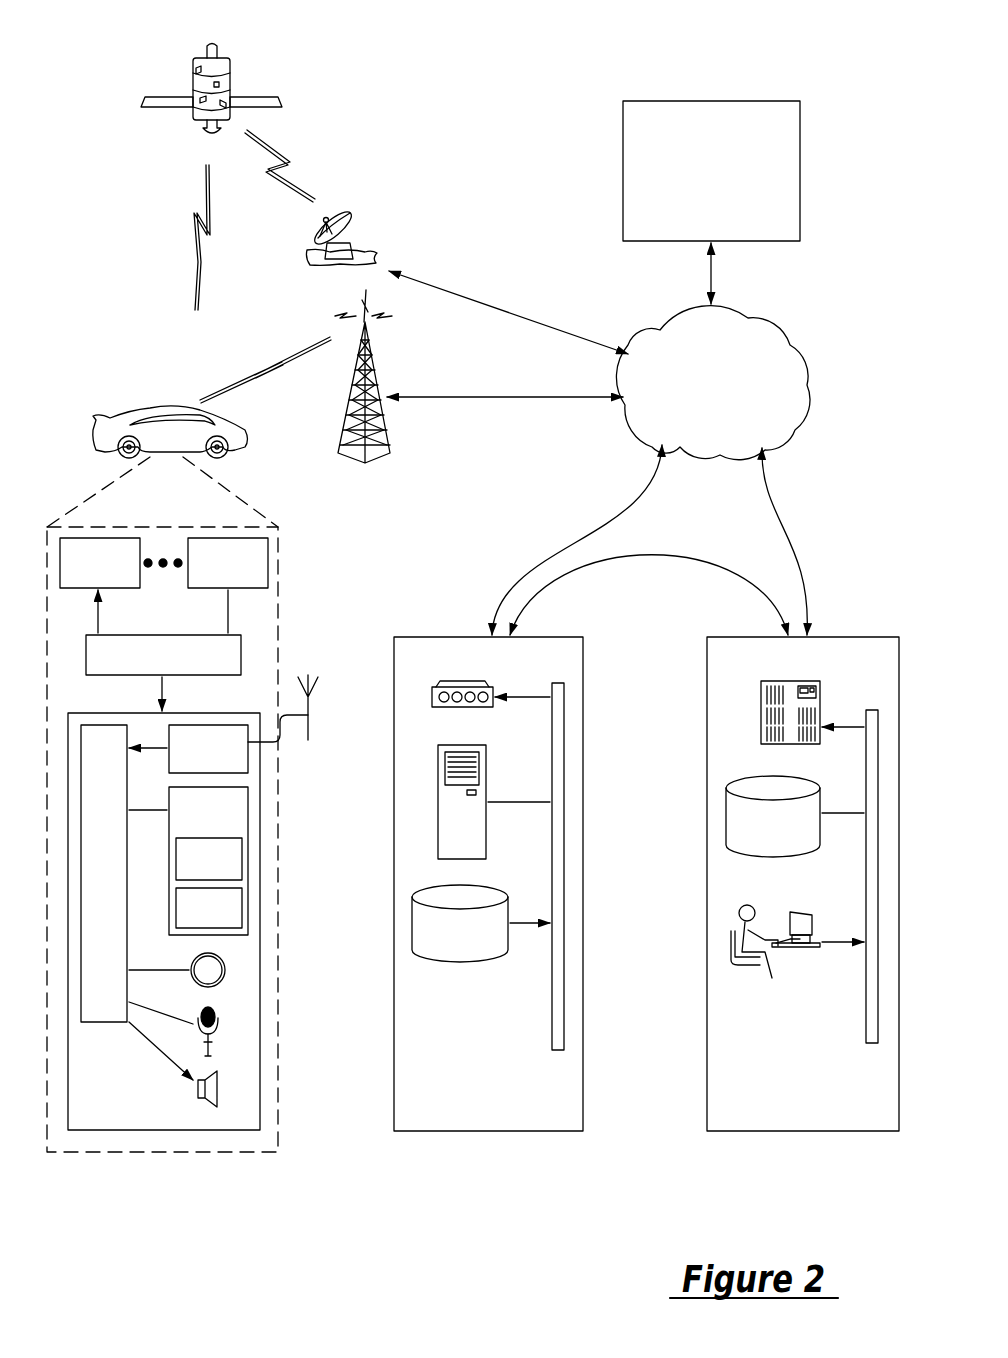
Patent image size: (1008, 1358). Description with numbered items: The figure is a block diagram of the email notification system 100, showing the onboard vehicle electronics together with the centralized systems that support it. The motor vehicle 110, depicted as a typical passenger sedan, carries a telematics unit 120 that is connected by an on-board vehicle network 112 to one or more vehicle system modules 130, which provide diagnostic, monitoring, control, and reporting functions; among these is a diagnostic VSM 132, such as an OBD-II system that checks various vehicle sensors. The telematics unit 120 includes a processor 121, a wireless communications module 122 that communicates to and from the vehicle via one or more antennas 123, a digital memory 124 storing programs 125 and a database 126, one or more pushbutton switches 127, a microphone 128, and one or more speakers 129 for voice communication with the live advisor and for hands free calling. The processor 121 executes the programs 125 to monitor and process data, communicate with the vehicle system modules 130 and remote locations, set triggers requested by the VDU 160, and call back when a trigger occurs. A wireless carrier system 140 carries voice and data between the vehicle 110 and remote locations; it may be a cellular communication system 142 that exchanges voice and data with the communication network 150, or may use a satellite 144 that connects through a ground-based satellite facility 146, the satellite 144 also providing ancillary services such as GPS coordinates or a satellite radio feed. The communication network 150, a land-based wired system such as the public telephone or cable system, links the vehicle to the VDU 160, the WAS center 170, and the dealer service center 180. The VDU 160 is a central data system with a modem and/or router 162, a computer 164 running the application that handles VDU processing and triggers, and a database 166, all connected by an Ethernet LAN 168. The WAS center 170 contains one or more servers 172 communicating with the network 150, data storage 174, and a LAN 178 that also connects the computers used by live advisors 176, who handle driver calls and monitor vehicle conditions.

The email notification system 100 is at (590, 63).
The motor vehicle 110 is at (148, 410).
The on-board vehicle network 112 is at (153, 665).
The telematics unit 120 is at (198, 1133).
The processor 121 is at (107, 1022).
The wireless communications module 122 is at (198, 760).
The antenna 123 is at (308, 725).
The digital memory 124 is at (198, 820).
The programs 125 is at (209, 859).
The database 126 is at (209, 908).
The pushbutton switch 127 is at (242, 970).
The microphone 128 is at (232, 1030).
The speaker 129 is at (232, 1090).
The vehicle system module 130 is at (90, 575).
The diagnostic VSM 132 is at (194, 553).
The wireless carrier system 140 is at (414, 176).
The cellular communication system 142 is at (388, 433).
The satellite 144 is at (232, 68).
The ground-based satellite facility 146 is at (372, 246).
The communication network 150 is at (698, 402).
The VDU 160 is at (489, 1148).
The modem and/or router 162 is at (462, 681).
The computer 164 is at (451, 845).
The database 166 is at (448, 948).
The Ethernet LAN 168 is at (552, 1000).
The WAS center 170 is at (800, 1148).
The server 172 is at (790, 681).
The data storage 174 is at (762, 835).
The live advisor 176 is at (765, 932).
The LAN 178 is at (866, 990).
The dealer service center 180 is at (698, 226).